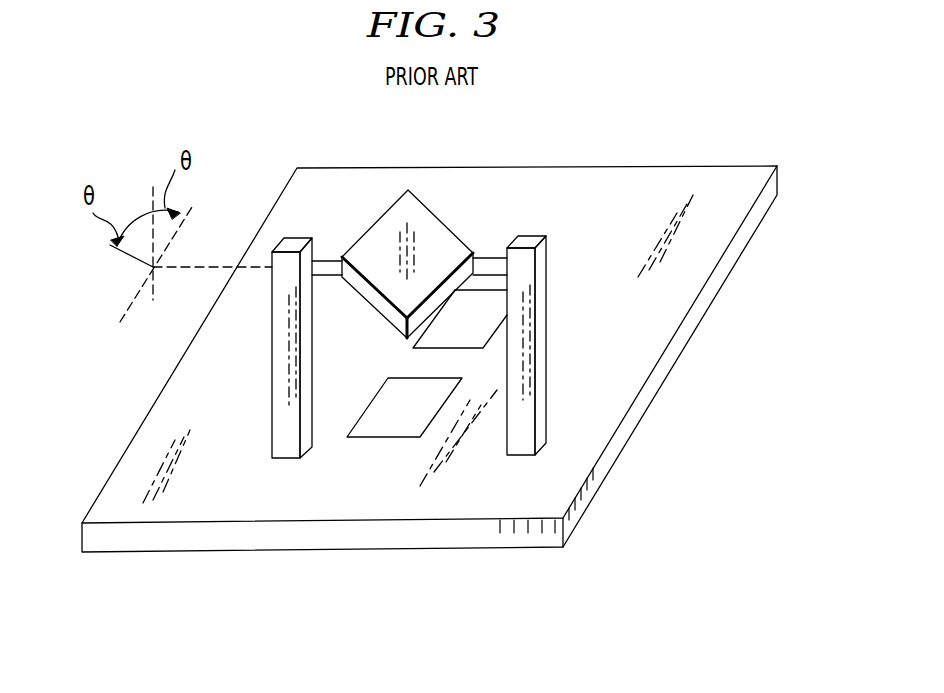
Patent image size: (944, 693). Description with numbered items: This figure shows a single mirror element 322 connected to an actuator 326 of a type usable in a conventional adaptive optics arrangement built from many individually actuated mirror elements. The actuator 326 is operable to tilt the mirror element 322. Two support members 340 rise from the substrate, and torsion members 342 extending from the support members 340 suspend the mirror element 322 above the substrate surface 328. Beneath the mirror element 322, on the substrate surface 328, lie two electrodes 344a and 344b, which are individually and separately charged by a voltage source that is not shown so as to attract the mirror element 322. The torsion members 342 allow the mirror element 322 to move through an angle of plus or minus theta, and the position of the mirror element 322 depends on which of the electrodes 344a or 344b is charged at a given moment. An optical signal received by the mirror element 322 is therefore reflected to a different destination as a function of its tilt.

The mirror element 322 is at (427, 228).
The actuator 326 is at (458, 484).
The substrate surface 328 is at (677, 185).
The support members 340 is at (278, 408).
The torsion members 342 is at (330, 262).
The electrode 344a is at (427, 343).
The electrode 344b is at (398, 428).